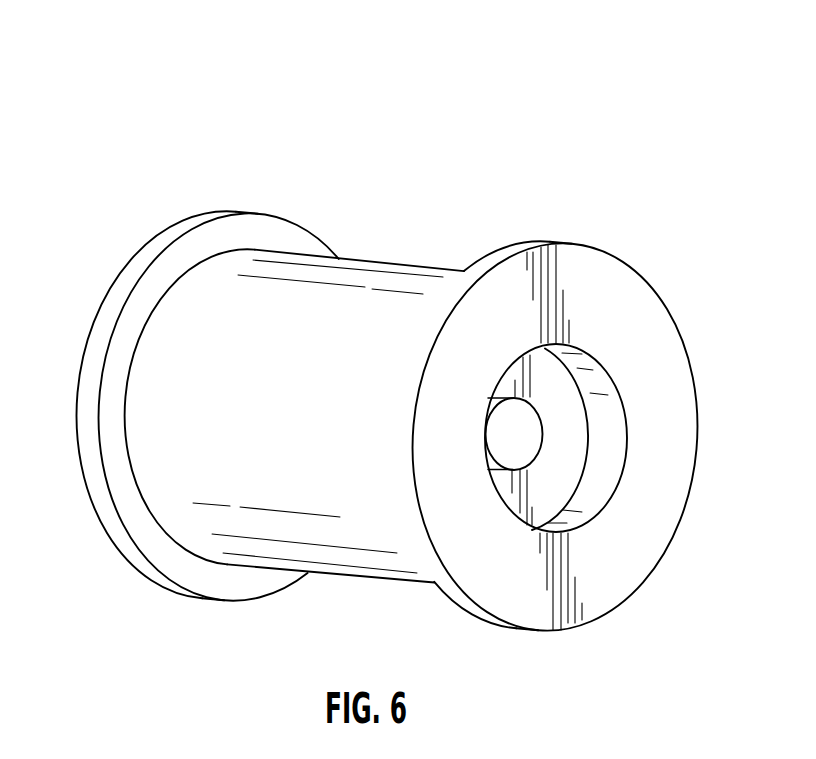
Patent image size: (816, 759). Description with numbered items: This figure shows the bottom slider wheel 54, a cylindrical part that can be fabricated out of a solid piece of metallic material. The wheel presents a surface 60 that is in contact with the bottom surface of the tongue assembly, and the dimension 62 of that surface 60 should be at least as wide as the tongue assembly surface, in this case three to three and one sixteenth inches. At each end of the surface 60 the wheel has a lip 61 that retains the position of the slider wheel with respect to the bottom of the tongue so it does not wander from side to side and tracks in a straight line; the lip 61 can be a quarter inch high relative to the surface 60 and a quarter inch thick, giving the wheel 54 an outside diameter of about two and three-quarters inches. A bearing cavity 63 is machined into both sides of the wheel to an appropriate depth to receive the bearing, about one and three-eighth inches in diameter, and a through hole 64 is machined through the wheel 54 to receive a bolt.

The bottom slider wheel 54 is at (138, 99).
The surface 60 is at (352, 280).
The lip 61 is at (192, 225).
The dimension 62 is at (396, 388).
The bearing cavity 63 is at (567, 422).
The central hole 64 is at (517, 439).